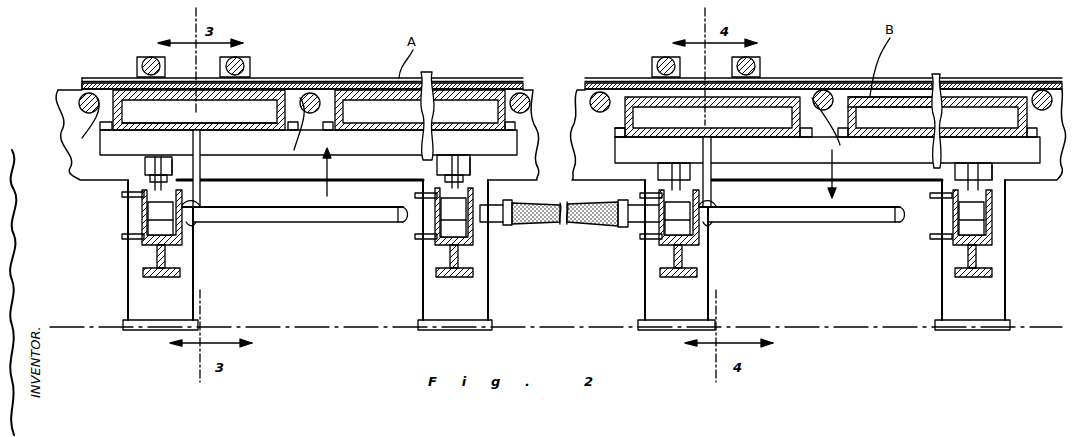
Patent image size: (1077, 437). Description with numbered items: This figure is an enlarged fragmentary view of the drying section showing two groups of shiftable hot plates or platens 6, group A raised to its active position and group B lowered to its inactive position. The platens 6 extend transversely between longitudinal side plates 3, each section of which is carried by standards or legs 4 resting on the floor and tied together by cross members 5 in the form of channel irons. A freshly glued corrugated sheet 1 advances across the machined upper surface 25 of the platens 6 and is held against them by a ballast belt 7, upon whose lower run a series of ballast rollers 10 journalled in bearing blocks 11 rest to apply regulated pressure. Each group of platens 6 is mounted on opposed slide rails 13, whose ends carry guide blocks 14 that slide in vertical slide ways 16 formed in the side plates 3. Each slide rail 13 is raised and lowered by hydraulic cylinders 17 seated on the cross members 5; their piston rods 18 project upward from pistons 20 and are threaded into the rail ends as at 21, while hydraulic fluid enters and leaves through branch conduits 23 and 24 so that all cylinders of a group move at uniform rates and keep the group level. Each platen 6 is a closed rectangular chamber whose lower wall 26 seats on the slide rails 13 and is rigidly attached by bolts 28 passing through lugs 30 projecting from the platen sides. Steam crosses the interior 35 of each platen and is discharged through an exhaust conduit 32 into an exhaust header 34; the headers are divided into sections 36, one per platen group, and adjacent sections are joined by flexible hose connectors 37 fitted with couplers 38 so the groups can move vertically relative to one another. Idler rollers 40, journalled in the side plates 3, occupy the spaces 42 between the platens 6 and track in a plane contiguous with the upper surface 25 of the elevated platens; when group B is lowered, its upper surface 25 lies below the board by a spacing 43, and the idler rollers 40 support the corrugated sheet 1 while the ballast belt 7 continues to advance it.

The corrugated sheet 1 is at (82, 78).
The side plates 3 is at (75, 183).
The legs 4 is at (128, 302).
The cross members 5 is at (166, 262).
The platens 6 is at (248, 128).
The ballast belt 7 is at (296, 78).
The ballast rollers 10 is at (150, 60).
The bearing blocks 11 is at (252, 66).
The slide rails 13 is at (342, 150).
The guide blocks 14 is at (173, 167).
The slide way 16 is at (200, 192).
The hydraulic cylinders 17 is at (184, 238).
The piston rods 18 is at (152, 168).
The pistons 20 is at (156, 210).
The piston rod attachment 21 is at (165, 145).
The branch conduit 23 is at (121, 191).
The branch conduit 24 is at (125, 239).
The machined upper surface 25 is at (470, 95).
The lower wall 26 is at (378, 130).
The bolts 28 is at (616, 130).
The lugs 30 is at (615, 135).
The exhaust conduit 32 is at (244, 220).
The exhaust header 34 is at (325, 212).
The platen interior 35 is at (256, 112).
The header sections 36 is at (370, 224).
The flexible hose connectors 37 is at (582, 226).
The couplers 38 is at (510, 227).
The idler rollers 40 is at (79, 103).
The platen spacing 42 is at (465, 134).
The downward spacing 43 is at (915, 96).